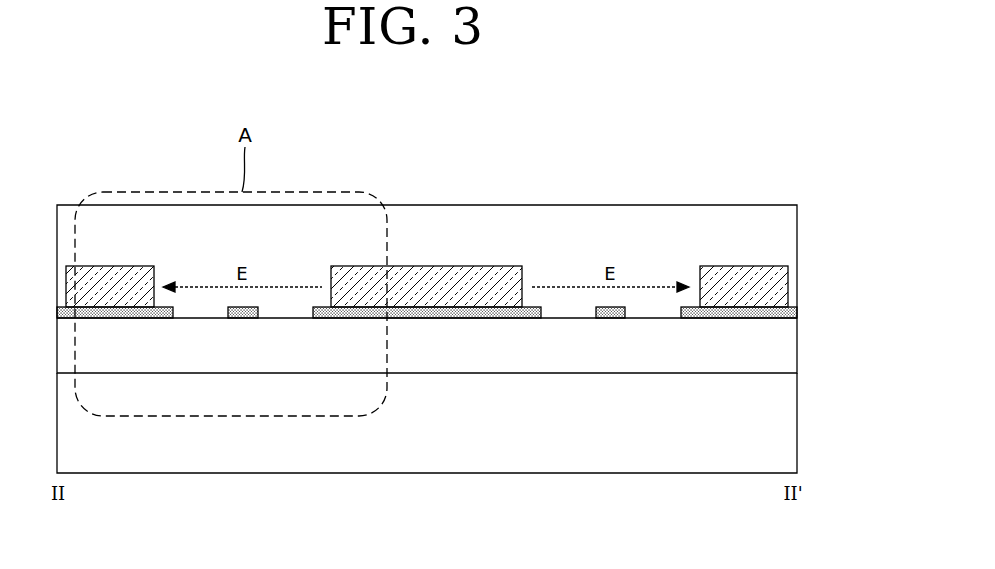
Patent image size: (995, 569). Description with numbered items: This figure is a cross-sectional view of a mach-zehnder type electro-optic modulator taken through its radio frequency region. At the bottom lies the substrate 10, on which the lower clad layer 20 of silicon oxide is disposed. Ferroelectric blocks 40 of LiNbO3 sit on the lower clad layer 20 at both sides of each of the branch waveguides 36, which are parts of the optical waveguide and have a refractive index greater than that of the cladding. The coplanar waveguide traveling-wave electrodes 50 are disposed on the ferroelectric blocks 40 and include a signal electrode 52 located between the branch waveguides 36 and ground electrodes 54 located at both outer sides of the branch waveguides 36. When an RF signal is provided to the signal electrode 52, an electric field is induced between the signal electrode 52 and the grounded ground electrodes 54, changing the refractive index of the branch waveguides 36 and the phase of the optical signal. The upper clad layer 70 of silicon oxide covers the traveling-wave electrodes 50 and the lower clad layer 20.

The substrate 10 is at (783, 423).
The lower clad layer 20 is at (783, 348).
The branch waveguides 36 is at (608, 318).
The ferroelectric blocks 40 is at (464, 427).
The coplanar waveguide traveling-wave electrodes 50 is at (468, 199).
The signal electrode 52 is at (473, 283).
The ground electrodes 54 is at (104, 283).
The upper clad layer 70 is at (783, 233).